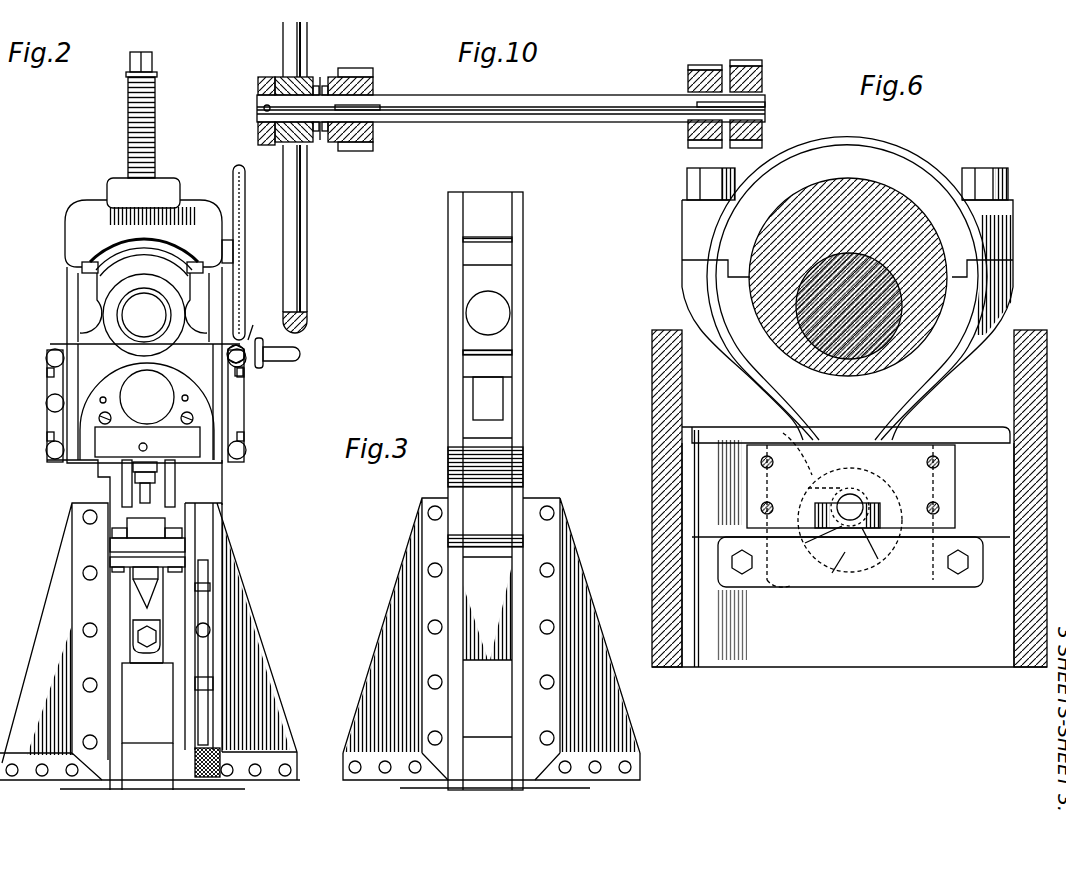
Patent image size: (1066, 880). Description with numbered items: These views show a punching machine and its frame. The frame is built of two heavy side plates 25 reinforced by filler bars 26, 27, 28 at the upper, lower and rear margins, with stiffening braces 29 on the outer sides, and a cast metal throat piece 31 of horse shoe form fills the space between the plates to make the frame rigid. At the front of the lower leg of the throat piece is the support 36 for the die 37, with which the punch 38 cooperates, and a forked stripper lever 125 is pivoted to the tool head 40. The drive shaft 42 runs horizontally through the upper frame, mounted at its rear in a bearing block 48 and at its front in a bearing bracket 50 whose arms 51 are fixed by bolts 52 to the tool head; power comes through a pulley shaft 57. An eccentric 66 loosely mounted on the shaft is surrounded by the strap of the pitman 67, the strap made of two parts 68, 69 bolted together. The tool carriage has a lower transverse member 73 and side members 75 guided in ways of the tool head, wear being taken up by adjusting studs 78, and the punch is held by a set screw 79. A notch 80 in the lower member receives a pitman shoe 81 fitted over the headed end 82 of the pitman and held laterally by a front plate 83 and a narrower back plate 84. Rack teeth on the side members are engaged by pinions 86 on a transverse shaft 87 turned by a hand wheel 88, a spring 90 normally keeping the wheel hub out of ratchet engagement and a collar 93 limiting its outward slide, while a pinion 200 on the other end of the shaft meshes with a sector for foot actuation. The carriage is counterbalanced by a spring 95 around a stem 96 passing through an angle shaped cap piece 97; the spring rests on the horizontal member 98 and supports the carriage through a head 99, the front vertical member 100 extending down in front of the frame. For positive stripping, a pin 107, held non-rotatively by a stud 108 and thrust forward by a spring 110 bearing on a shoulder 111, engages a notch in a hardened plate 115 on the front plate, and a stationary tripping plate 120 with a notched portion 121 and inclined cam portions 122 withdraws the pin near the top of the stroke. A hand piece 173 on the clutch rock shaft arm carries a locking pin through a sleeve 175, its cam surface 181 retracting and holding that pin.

In FIG. 2, the side plates 25 is at (173, 702).
In FIG. 3, the side plates 25 is at (450, 289).
In FIG. 3, the upper filler bar 26 is at (490, 200).
In FIG. 2, the lower filler bar 27 is at (146, 752).
In FIG. 3, the lower filler bar 27 is at (481, 752).
In FIG. 2, the rear filler bar 28 is at (133, 726).
In FIG. 3, the rear filler bar 28 is at (505, 690).
In FIG. 2, the stiffening braces 29 is at (50, 609).
In FIG. 3, the stiffening braces 29 is at (390, 617).
In FIG. 3, the throat piece 31 is at (510, 482).
In FIG. 2, the die support 36 is at (158, 592).
In FIG. 2, the die 37 is at (147, 545).
In FIG. 2, the punch 38 is at (153, 498).
In FIG. 2, the tool head 40 is at (65, 309).
In FIG. 2, the drive shaft 42 is at (155, 320).
In FIG. 6, the drive shaft 42 is at (853, 350).
In FIG. 3, the bearing block 48 is at (502, 324).
In FIG. 2, the bearing bracket 50 is at (123, 342).
In FIG. 2, the bearing bracket arms 51 is at (65, 466).
In FIG. 2, the bolts 52 is at (47, 444).
In FIG. 2, the pulley shaft 57 is at (63, 386).
In FIG. 2, the eccentric 66 is at (155, 272).
In FIG. 6, the pitman 67 is at (895, 416).
In FIG. 6, the pitman strap part 68 is at (752, 357).
In FIG. 6, the pitman strap part 69 is at (863, 150).
In FIG. 6, the lower transverse member 73 is at (935, 660).
In FIG. 6, the side members 75 is at (657, 413).
In FIG. 2, the adjusting studs 78 is at (48, 376).
In FIG. 2, the set screw 79 is at (148, 447).
In FIG. 6, the notch 80 is at (830, 566).
In FIG. 6, the pitman shoe 81 is at (787, 580).
In FIG. 6, the headed end of pitman 82 is at (784, 442).
In FIG. 2, the front plate 83 is at (115, 426).
In FIG. 6, the front plate 83 is at (965, 453).
In FIG. 6, the back plate 84 is at (951, 578).
In FIG. 10, the pinions 86 is at (355, 146).
In FIG. 10, the transverse shaft 87 is at (437, 119).
In FIG. 2, the hand wheel 88 is at (236, 177).
In FIG. 10, the hand wheel 88 is at (295, 49).
In FIG. 10, the spring 90 is at (320, 93).
In FIG. 10, the collar 93 is at (258, 84).
In FIG. 2, the counterbalance spring 95 is at (155, 125).
In FIG. 2, the stem 96 is at (141, 52).
In FIG. 2, the cap piece 97 is at (95, 202).
In FIG. 2, the horizontal member of cap piece 98 is at (170, 180).
In FIG. 2, the stem head 99 is at (154, 63).
In FIG. 2, the front vertical member of cap piece 100 is at (167, 193).
In FIG. 6, the interlocking pin 107 is at (850, 504).
In FIG. 6, the stud 108 is at (808, 491).
In FIG. 6, the pin spring 110 is at (844, 568).
In FIG. 6, the pin shoulder 111 is at (885, 549).
In FIG. 2, the hardened plate 115 is at (147, 411).
In FIG. 6, the tripping plate 120 is at (910, 460).
In FIG. 6, the notched portion 121 is at (813, 541).
In FIG. 6, the cam portions 122 is at (872, 505).
In FIG. 2, the stripper lever 125 is at (130, 489).
In FIG. 2, the hand piece 173 is at (295, 361).
In FIG. 2, the sleeve 175 is at (266, 324).
In FIG. 2, the cam surface 181 is at (265, 349).
In FIG. 10, the pinion 200 is at (757, 60).